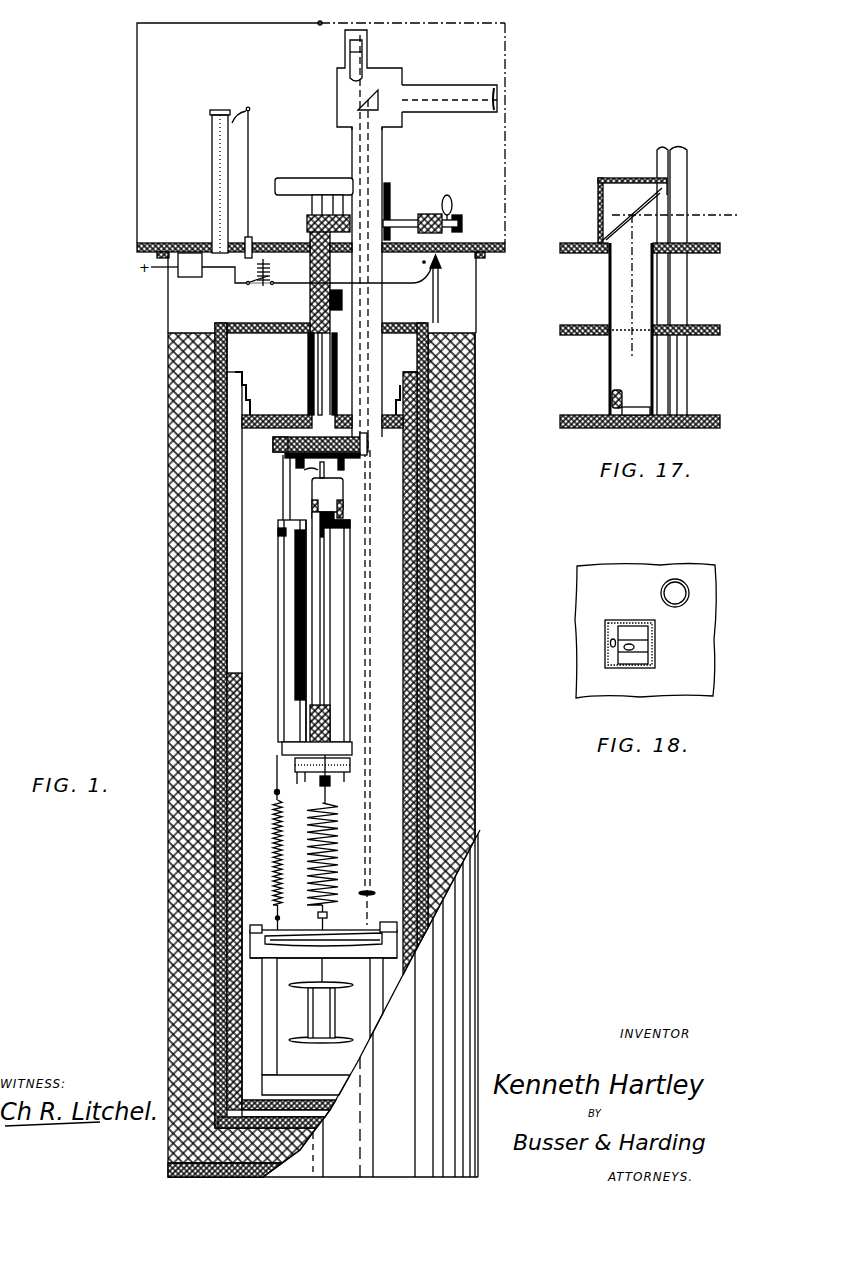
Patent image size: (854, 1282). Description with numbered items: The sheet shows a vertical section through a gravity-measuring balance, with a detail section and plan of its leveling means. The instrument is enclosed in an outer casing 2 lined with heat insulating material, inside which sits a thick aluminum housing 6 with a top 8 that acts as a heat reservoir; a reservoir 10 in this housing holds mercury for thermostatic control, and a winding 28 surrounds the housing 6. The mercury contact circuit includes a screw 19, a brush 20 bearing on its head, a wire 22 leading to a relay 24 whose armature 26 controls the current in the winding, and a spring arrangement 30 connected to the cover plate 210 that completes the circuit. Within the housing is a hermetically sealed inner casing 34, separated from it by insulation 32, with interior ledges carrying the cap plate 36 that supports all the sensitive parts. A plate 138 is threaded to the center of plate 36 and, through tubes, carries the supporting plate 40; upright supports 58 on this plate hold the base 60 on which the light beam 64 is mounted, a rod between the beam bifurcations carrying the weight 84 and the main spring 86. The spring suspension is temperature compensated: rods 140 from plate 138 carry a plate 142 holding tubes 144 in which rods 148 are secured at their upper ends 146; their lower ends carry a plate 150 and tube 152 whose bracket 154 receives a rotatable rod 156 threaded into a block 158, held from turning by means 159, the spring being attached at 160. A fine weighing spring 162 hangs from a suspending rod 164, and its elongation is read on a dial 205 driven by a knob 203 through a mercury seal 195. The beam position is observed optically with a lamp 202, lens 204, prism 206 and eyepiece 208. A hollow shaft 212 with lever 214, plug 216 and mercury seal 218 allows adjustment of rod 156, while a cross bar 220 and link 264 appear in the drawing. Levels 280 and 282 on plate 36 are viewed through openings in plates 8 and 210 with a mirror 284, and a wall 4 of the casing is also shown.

In FIG. 1, the outer casing 2 is at (476, 510).
In FIG. 1, the inner casing wall 4 is at (466, 440).
In FIG. 1, the housing 6 is at (430, 488).
In FIG. 1, the top of housing 8 is at (402, 324).
In FIG. 17, the top of housing 8 is at (713, 326).
In FIG. 1, the reservoir 10 is at (428, 592).
In FIG. 1, the screw 19 is at (220, 110).
In FIG. 1, the brush 20 is at (238, 118).
In FIG. 1, the wire 22 is at (250, 152).
In FIG. 1, the relay 24 is at (271, 269).
In FIG. 1, the relay armature 26 is at (262, 286).
In FIG. 1, the winding 28 is at (426, 378).
In FIG. 1, the spring arrangement 30 is at (439, 295).
In FIG. 1, the insulation 32 is at (240, 371).
In FIG. 1, the inner casing 34 is at (247, 398).
In FIG. 1, the cap plate 36 is at (252, 416).
In FIG. 17, the cap plate 36 is at (712, 416).
In FIG. 18, the cap plate 36 is at (704, 674).
In FIG. 1, the supporting plate 40 is at (312, 1088).
In FIG. 1, the upright supports 58 is at (268, 1010).
In FIG. 1, the base 60 is at (352, 955).
In FIG. 1, the beam 64 is at (304, 935).
In FIG. 1, the weight 84 is at (308, 1012).
In FIG. 1, the main spring 86 is at (338, 832).
In FIG. 1, the plate 138 is at (368, 446).
In FIG. 1, the vertically extending rods 140 is at (283, 506).
In FIG. 1, the plate 142 is at (279, 744).
In FIG. 1, the tubes 144 is at (302, 592).
In FIG. 1, the upper ends of rods 146 is at (350, 526).
In FIG. 1, the rods 148 is at (296, 549).
In FIG. 1, the plate 150 is at (297, 785).
In FIG. 1, the tube 152 is at (322, 633).
In FIG. 1, the bracket 154 is at (344, 495).
In FIG. 1, the rotatable rod 156 is at (331, 716).
In FIG. 1, the block 158 is at (353, 748).
In FIG. 1, the holding means 159 is at (350, 766).
In FIG. 1, the spring connection 160 is at (331, 790).
In FIG. 1, the weighing spring 162 is at (273, 843).
In FIG. 1, the suspending rod 164 is at (283, 646).
In FIG. 1, the mercury seal 195 is at (343, 306).
In FIG. 1, the lamp 202 is at (340, 70).
In FIG. 1, the glass plate 203 is at (455, 216).
In FIG. 1, the lens 204 is at (371, 893).
In FIG. 1, the indicating dial 205 is at (314, 179).
In FIG. 1, the reflecting prism 206 is at (368, 92).
In FIG. 1, the eyepiece 208 is at (499, 94).
In FIG. 1, the plate 210 is at (464, 243).
In FIG. 17, the plate 210 is at (712, 243).
In FIG. 1, the hollow shaft 212 is at (137, 118).
In FIG. 1, the lever 214 is at (410, 220).
In FIG. 1, the screw plug 216 is at (312, 212).
In FIG. 1, the mercury seal 218 is at (310, 352).
In FIG. 1, the cross bar 220 is at (292, 461).
In FIG. 1, the link 264 is at (307, 478).
In FIG. 17, the level 280 is at (612, 392).
In FIG. 18, the level 280 is at (613, 652).
In FIG. 17, the level 282 is at (640, 412).
In FIG. 18, the level 282 is at (634, 645).
In FIG. 17, the mirror 284 is at (650, 199).